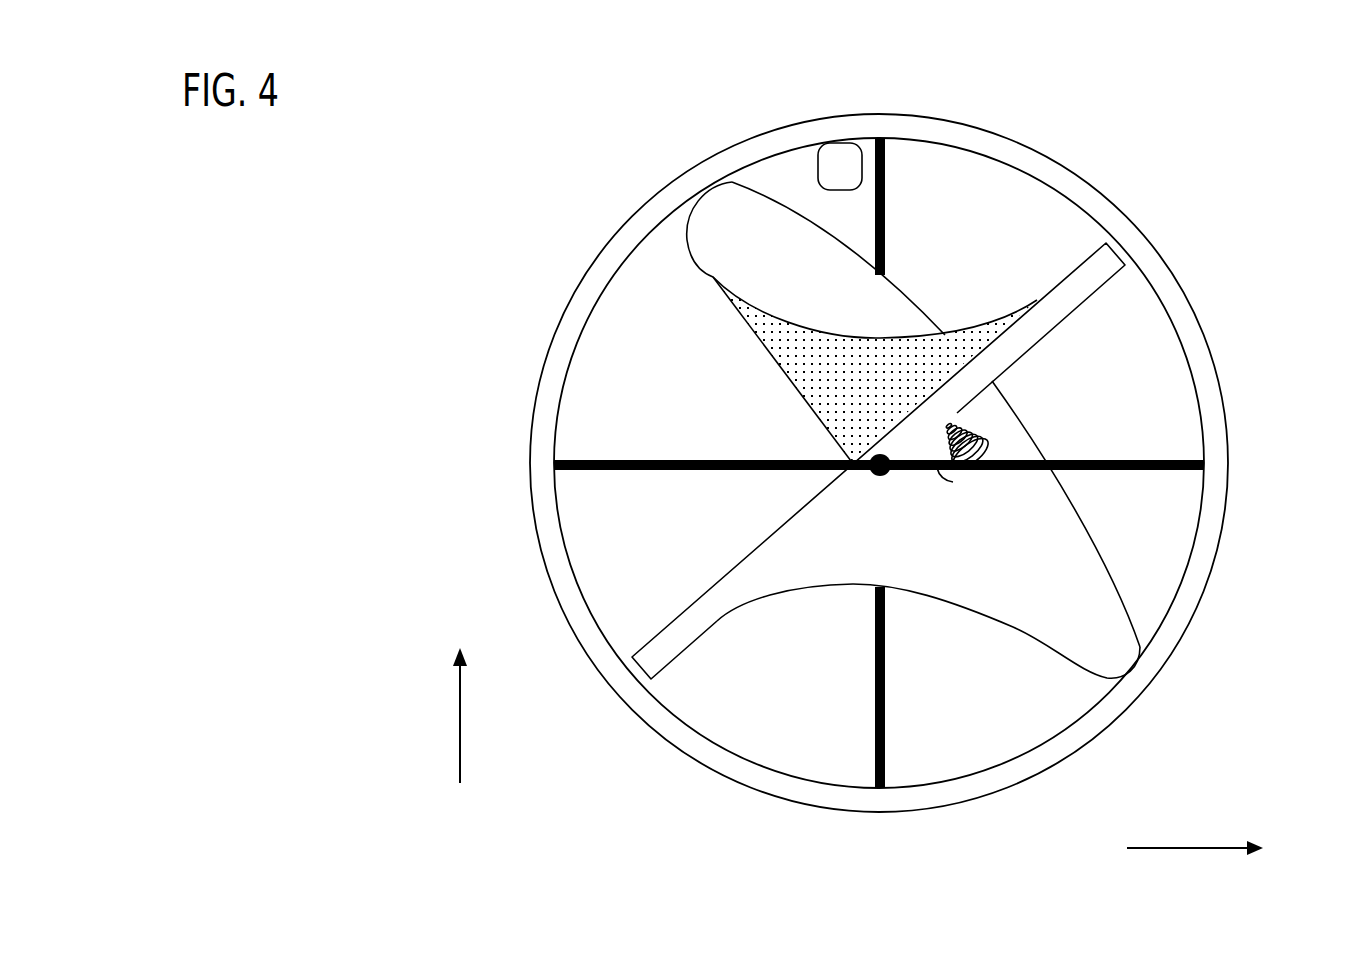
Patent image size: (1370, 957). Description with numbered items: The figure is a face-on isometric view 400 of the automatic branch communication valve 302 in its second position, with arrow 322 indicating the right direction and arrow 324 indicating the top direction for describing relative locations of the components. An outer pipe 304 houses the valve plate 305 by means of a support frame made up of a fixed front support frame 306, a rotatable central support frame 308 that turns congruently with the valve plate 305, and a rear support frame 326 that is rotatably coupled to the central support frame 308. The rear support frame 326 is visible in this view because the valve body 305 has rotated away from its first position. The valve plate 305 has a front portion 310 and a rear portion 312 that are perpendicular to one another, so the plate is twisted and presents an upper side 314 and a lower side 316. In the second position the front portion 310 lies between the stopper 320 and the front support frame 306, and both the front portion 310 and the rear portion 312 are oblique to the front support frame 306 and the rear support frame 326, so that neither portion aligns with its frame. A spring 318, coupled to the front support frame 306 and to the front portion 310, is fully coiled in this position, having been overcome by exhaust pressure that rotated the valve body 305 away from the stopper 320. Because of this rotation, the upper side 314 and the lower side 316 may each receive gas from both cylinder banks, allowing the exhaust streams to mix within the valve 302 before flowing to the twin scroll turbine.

The face-on isometric view 400 is at (1295, 88).
The valve 302 is at (1046, 88).
The outer pipe 304 is at (1157, 253).
The valve plate 305 is at (952, 211).
The front support frame 306 is at (1105, 460).
The central support frame 308 is at (883, 477).
The front portion 310 is at (696, 598).
The rear portion 312 is at (1100, 548).
The upper side 314 is at (961, 566).
The lower side 316 is at (859, 402).
The spring 318 is at (990, 448).
The stopper 320 is at (842, 190).
The arrow 322 is at (1162, 847).
The arrow 324 is at (460, 747).
The rear support frame 326 is at (880, 730).